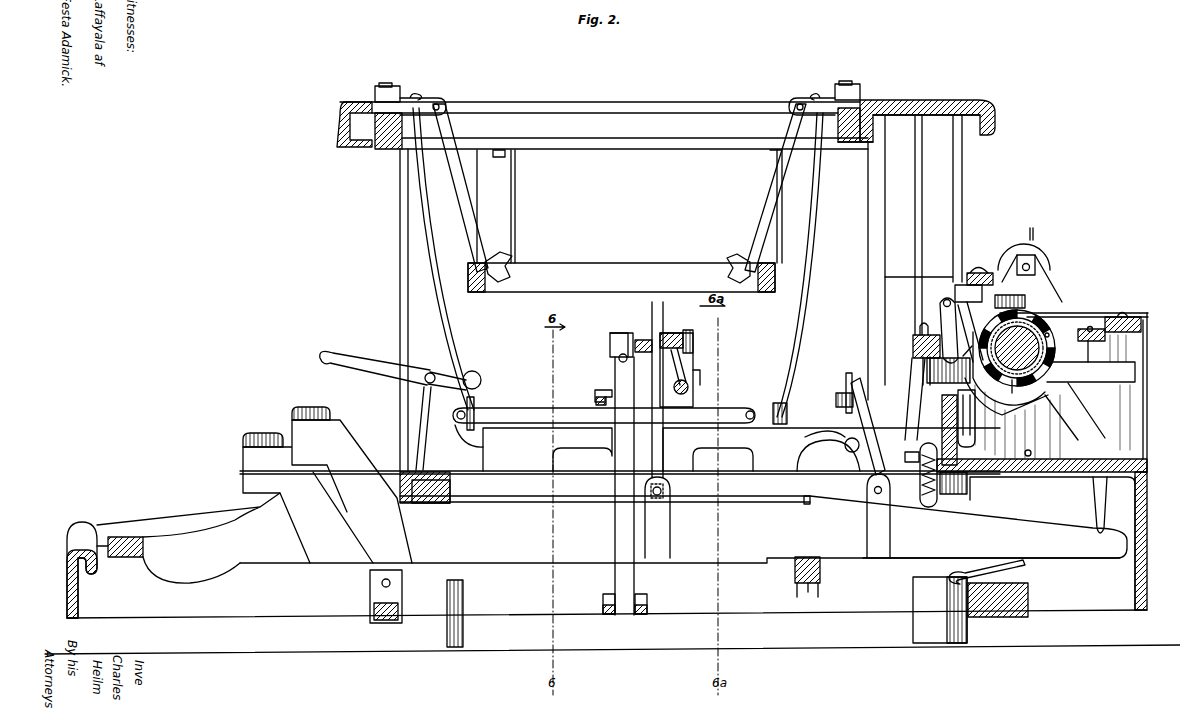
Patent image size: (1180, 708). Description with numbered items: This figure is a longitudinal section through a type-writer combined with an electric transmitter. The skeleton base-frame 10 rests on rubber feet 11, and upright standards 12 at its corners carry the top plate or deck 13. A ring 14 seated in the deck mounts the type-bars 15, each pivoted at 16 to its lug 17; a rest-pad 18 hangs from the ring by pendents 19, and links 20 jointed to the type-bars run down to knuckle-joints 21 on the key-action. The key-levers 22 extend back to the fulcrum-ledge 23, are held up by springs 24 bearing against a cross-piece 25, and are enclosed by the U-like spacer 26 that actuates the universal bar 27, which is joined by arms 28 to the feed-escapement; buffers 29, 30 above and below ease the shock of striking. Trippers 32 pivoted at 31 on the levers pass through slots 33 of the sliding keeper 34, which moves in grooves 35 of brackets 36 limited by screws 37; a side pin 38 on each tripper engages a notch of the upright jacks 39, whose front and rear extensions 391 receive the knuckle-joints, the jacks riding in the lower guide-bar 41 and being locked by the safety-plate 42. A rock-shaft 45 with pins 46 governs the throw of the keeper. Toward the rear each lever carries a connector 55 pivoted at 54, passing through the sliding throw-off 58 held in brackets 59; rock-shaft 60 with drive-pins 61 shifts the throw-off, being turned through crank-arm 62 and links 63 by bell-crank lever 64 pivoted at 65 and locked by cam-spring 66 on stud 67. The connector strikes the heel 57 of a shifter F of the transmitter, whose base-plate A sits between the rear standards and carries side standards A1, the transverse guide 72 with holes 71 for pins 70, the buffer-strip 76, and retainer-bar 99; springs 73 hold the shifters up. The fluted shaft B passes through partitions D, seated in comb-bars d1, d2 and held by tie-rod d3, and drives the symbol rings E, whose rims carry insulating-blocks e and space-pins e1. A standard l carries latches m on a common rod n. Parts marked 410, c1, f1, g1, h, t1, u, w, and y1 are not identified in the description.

The skeleton base-frame 10 is at (607, 555).
The rubber plugs or feet 11 is at (463, 631).
The upright standards 12 is at (400, 229).
The top plate or deck 13 is at (920, 100).
The ring 14 is at (390, 140).
The type-bars 15 is at (470, 206).
The pivots of type-bars 16 is at (438, 104).
The lugs 17 is at (617, 96).
The rest-pad 18 is at (470, 285).
The pendents 19 is at (517, 205).
The links 20 is at (432, 278).
The knuckle-joint 21 is at (617, 415).
The keys or key-levers 22 is at (685, 485).
The fulcrum-ledge 23 is at (1098, 501).
The springs 24 is at (1002, 570).
The cross-piece 25 is at (1005, 598).
The U-like spacer 26 is at (177, 545).
The universal bar 27 is at (822, 578).
The arms 28 is at (806, 504).
The upper buffer 29 is at (437, 505).
The lower buffer 30 is at (376, 624).
The pivot of trippers 31 is at (670, 490).
The trippers 32 is at (663, 455).
The slots of keeper 33 is at (670, 340).
The cross-plate or keeper 34 is at (625, 338).
The grooves or ways 35 is at (690, 335).
The brackets 36 is at (741, 449).
The screws 37 is at (641, 338).
The side pin 38 is at (610, 355).
The upright jacks 39 is at (618, 375).
The lower guide-bar 41 is at (650, 606).
The safety-plate 42 is at (598, 388).
The rock-shaft 45 is at (697, 373).
The pins 46 is at (700, 378).
The pivot of connector 54 is at (879, 495).
The connector 55 is at (858, 385).
The heel of shifter 57 is at (911, 399).
The sliding throw-off 58 is at (837, 398).
The brackets 59 is at (828, 455).
The rock-shaft 60 is at (845, 445).
The drive-pins 61 is at (847, 380).
The crank-arm 62 is at (815, 437).
The links 63 is at (780, 430).
The bell-crank lever 64 is at (382, 375).
The pivot of bell-crank lever 65 is at (480, 376).
The cam-spring 66 is at (420, 408).
The stud 67 is at (415, 376).
The guide-pins 70 is at (918, 330).
The holes 71 is at (913, 346).
The transverse guide 72 is at (866, 339).
The springs 73 is at (943, 497).
The buffer-strip 76 is at (944, 374).
The retainer-bar 99 is at (907, 457).
The front and rear extensions of jacks 391 is at (557, 415).
The block 410 is at (596, 397).
The base-plate A is at (1042, 461).
The side standards A1 is at (1127, 389).
The fluted shaft or driver B is at (1040, 313).
The partitions D is at (1047, 395).
The symbol disks or rings E is at (1050, 348).
The shifters F is at (1091, 372).
The lever c1 is at (962, 355).
The comb-bar d1 is at (985, 270).
The comb-bar d2 is at (1090, 328).
The tie-rod d3 is at (1028, 458).
The insulating-blocks e is at (1044, 346).
The space-pins e1 is at (1047, 333).
The lever f1 is at (970, 332).
The block g1 is at (990, 293).
The slot h is at (974, 418).
The standard l is at (928, 463).
The latches m is at (947, 330).
The pivot rod n is at (945, 406).
The block t1 is at (1135, 318).
The pin u is at (1092, 330).
The roller w is at (1030, 262).
The pin y1 is at (1031, 228).